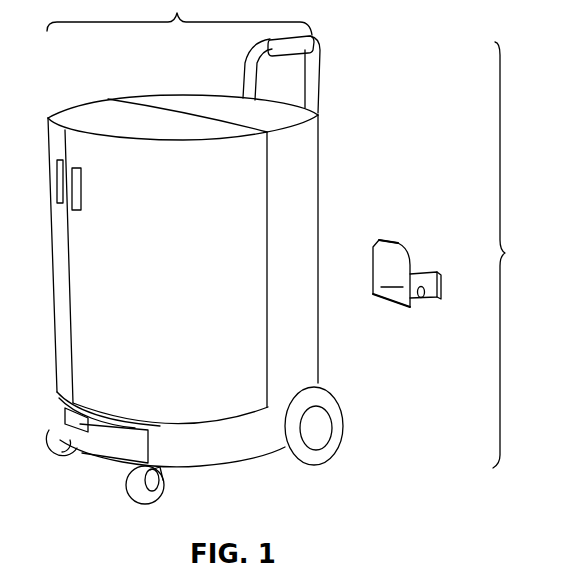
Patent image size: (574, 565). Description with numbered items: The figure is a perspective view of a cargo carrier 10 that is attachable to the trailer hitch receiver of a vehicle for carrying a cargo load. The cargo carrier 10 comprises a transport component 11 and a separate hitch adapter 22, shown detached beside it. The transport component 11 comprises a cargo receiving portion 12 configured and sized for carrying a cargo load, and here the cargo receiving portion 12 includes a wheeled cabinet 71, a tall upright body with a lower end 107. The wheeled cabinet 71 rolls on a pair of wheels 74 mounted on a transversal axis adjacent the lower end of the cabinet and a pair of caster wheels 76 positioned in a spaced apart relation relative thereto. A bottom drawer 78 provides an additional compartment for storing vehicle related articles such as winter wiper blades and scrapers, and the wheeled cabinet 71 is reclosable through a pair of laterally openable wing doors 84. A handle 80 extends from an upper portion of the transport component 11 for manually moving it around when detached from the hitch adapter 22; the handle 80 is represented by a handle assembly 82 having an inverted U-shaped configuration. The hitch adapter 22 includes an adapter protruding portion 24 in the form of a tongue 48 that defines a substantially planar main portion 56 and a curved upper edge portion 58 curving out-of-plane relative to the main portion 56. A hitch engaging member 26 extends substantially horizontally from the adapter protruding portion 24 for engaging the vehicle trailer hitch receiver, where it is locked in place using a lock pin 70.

The cargo carrier 10 is at (514, 255).
The transport component 11 is at (428, 558).
The cargo receiving portion 12 is at (322, 204).
The hitch adapter 22 is at (397, 282).
The adapter protruding portion 24 is at (385, 254).
The hitch engaging member 26 is at (426, 270).
The tongue 48 is at (370, 273).
The main portion 56 is at (392, 297).
The curved upper edge portion 58 is at (393, 244).
The lock pin 70 is at (426, 299).
The wheeled cabinet 71 is at (92, 97).
The wheels 74 is at (304, 453).
The caster wheels 76 is at (55, 443).
The bottom drawer 78 is at (88, 437).
The handle 80 is at (313, 41).
The handle assembly 82 is at (316, 88).
The wing doors 84 is at (62, 348).
The lower end 107 is at (264, 455).